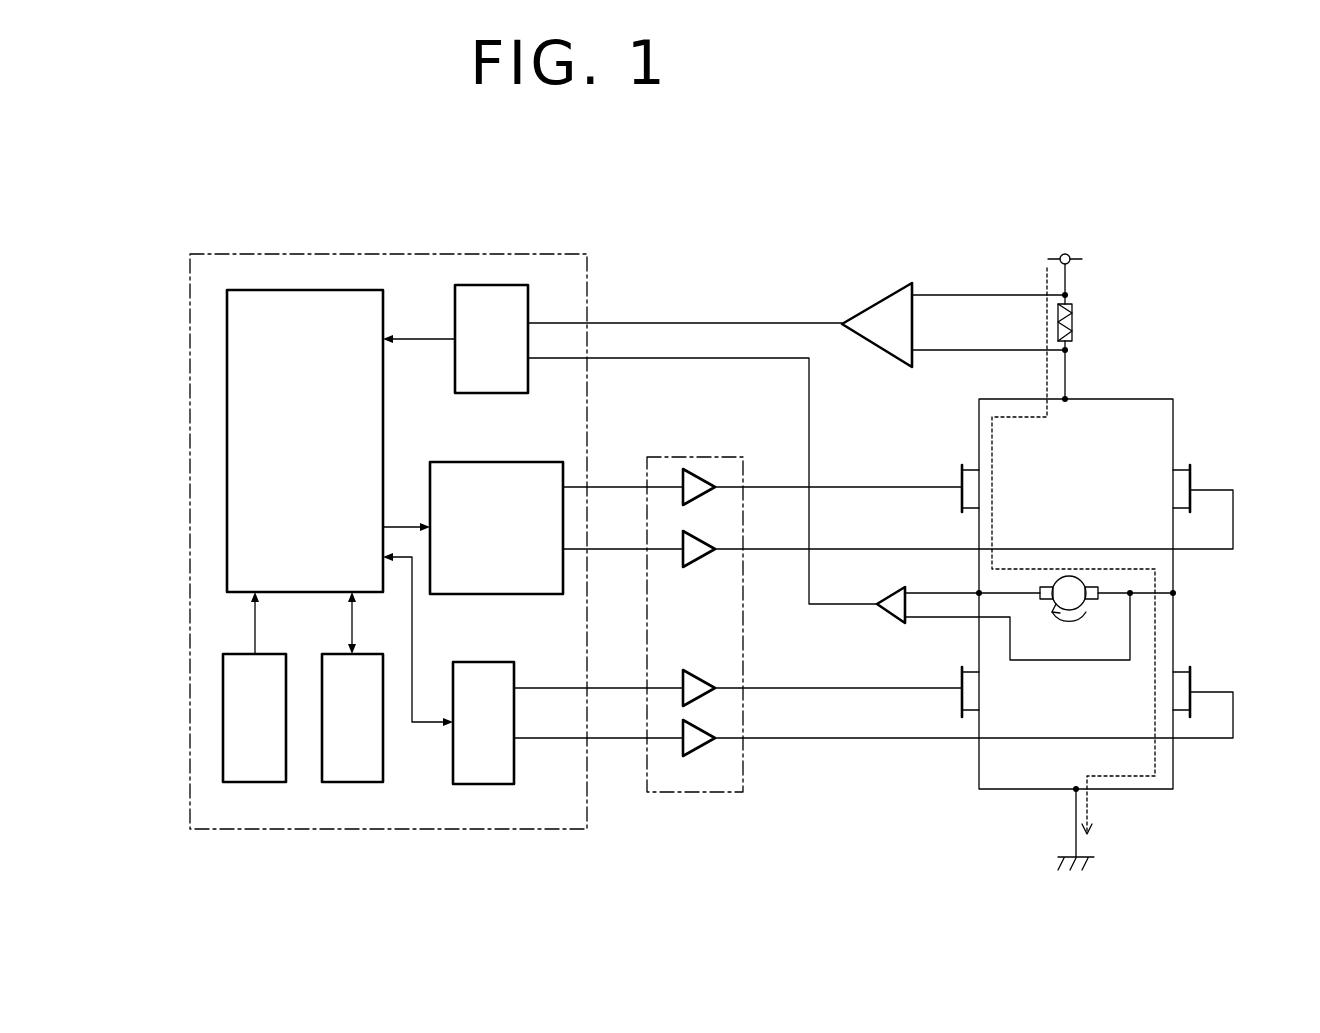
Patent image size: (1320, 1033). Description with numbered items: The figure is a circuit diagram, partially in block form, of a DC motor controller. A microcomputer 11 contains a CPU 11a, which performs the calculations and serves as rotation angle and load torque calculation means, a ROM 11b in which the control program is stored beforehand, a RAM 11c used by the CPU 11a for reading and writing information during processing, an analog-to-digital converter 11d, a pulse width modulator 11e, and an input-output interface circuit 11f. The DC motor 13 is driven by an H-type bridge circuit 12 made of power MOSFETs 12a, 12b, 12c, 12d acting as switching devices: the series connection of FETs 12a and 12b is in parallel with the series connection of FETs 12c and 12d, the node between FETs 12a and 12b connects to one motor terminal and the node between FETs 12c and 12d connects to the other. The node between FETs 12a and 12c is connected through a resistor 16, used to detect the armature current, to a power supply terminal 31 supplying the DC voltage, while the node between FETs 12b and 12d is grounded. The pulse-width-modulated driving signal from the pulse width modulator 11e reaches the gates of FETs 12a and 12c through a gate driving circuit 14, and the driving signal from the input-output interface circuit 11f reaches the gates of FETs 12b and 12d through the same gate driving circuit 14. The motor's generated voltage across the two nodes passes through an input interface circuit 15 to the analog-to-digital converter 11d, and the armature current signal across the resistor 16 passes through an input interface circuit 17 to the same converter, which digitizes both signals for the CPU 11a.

The microcomputer 11 is at (415, 253).
The CPU 11a is at (304, 288).
The ROM 11b is at (253, 783).
The RAM 11c is at (348, 783).
The analog-to-digital converter 11d is at (491, 284).
The pulse width modulator 11e is at (500, 462).
The input-output interface circuit 11f is at (514, 670).
The H-type bridge circuit 12 is at (1100, 393).
The FET 12a is at (966, 493).
The FET 12b is at (968, 688).
The FET 12c is at (1180, 465).
The FET 12d is at (1192, 678).
The DC motor 13 is at (1070, 576).
The gate driving circuit 14 is at (692, 793).
The input interface circuit 15 is at (890, 618).
The resistor 16 is at (1075, 322).
The input interface circuit 17 is at (886, 356).
The power supply terminal 31 is at (1066, 252).